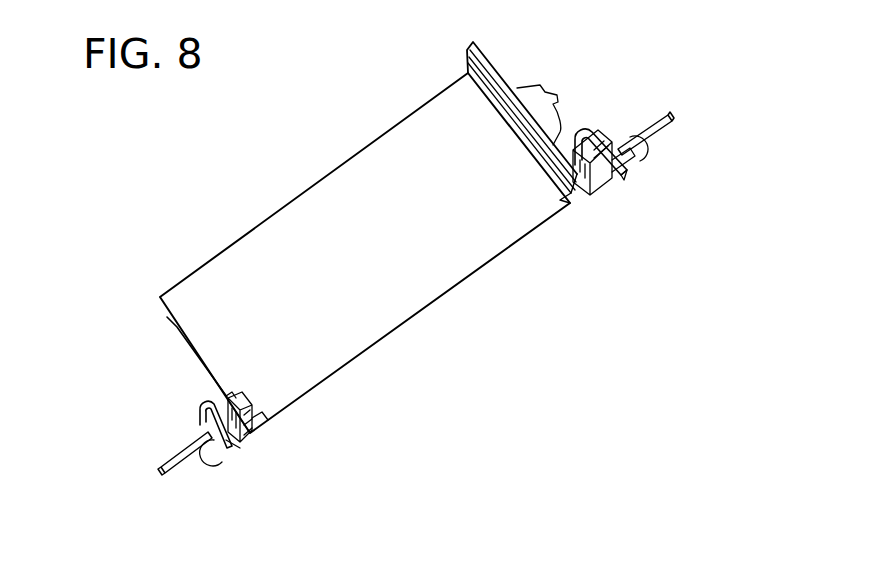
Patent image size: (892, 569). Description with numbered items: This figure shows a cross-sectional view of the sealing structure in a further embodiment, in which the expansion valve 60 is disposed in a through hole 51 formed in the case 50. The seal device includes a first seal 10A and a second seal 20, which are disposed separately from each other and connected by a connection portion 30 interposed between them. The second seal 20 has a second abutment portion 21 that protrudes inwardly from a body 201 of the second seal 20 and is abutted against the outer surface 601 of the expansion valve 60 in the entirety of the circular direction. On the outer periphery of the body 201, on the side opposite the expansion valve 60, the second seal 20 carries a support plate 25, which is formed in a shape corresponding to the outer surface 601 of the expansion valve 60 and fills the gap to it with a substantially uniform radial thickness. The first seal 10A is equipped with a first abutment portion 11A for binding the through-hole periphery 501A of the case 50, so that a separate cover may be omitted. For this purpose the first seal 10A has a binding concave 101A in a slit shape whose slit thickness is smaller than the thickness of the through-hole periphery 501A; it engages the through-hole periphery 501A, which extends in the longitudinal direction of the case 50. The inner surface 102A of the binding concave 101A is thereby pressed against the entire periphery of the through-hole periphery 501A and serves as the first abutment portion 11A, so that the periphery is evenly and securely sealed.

The expansion valve 60 is at (412, 228).
The through hole 51 is at (463, 263).
The case 50 is at (643, 130).
The through-hole periphery 501A is at (627, 143).
The first abutment portion 11A is at (640, 140).
The inner surface of the binding concave 102A is at (700, 187).
The first seal 10A is at (623, 177).
The binding concave 101A is at (640, 177).
The second seal 20 is at (258, 432).
The connection portion 30 is at (208, 402).
The body of the second seal 201 is at (230, 402).
The second abutment portion 21 is at (262, 422).
The support plate 25 is at (232, 442).
The outer surface of the expansion valve 601 is at (247, 402).